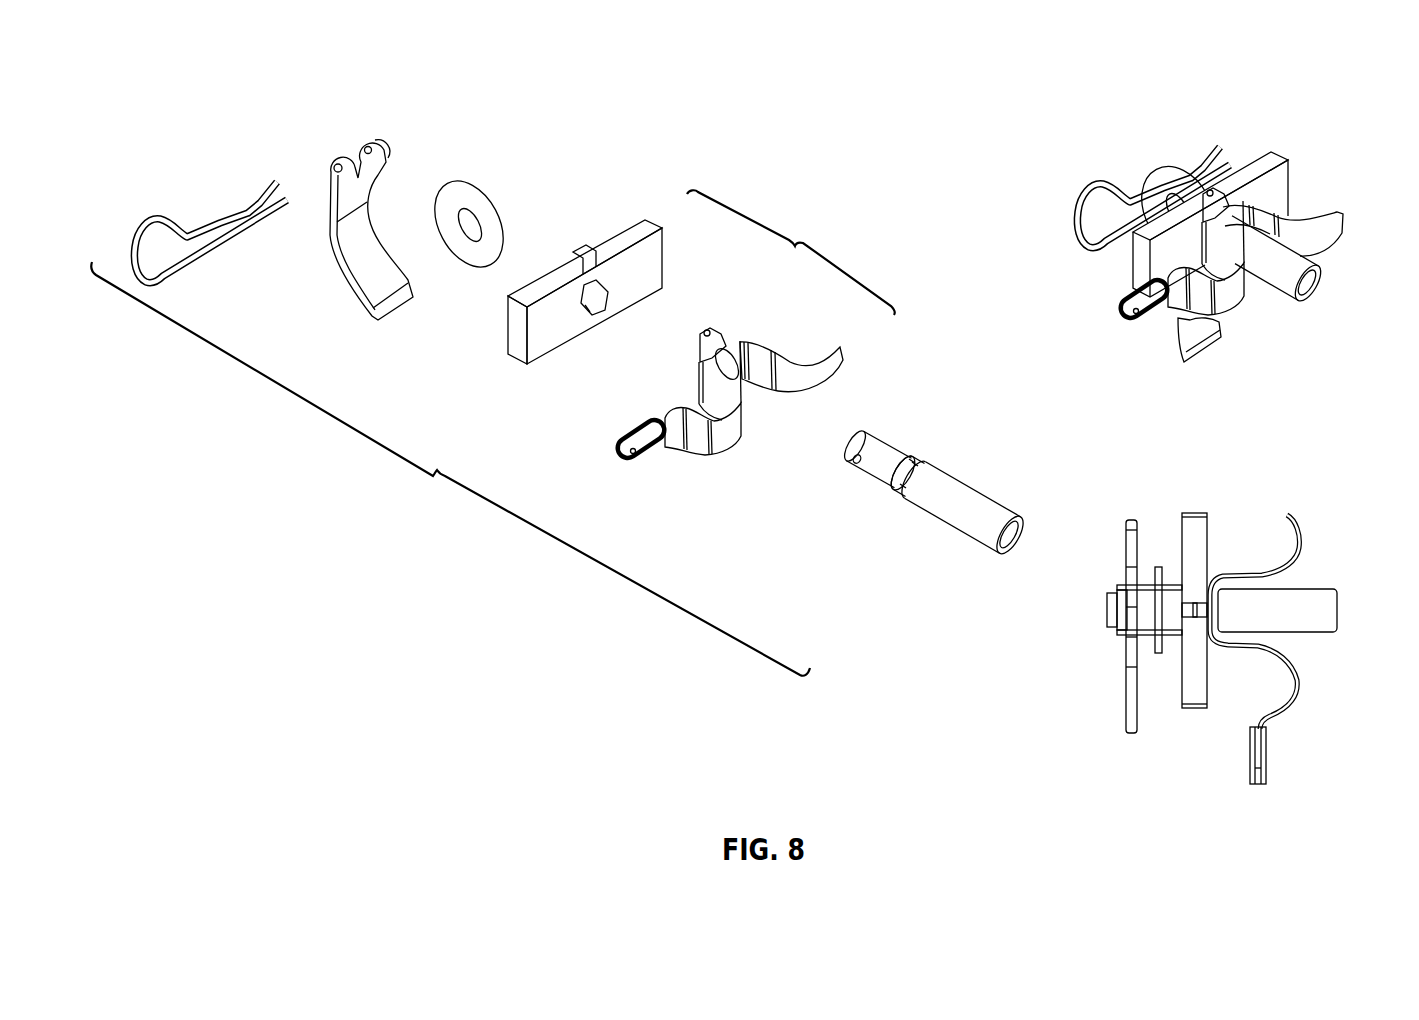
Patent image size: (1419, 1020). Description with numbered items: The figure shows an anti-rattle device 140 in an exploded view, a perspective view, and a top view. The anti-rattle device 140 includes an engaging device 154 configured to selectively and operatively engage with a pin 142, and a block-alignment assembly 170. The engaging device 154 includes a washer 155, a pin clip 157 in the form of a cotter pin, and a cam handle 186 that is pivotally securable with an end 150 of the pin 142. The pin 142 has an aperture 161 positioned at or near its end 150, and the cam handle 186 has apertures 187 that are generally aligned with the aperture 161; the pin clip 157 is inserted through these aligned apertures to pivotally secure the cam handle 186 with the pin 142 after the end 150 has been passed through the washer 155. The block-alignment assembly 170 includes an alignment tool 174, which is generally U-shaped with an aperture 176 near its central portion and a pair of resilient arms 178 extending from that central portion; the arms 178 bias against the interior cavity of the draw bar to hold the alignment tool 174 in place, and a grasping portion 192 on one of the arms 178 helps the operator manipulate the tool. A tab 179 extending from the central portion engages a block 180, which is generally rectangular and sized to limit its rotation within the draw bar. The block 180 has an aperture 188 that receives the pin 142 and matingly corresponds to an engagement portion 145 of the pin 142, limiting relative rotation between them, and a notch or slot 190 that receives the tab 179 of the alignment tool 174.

The anti-rattle device 140 is at (1345, 123).
The pin 142 is at (960, 518).
The engagement portion 145 is at (893, 485).
The end 150 is at (867, 440).
The engaging device 154 is at (445, 143).
The washer 155 is at (492, 197).
The pin clip 157 is at (197, 253).
The aperture 161 is at (852, 461).
The block-alignment assembly 170 is at (791, 252).
The alignment tool 174 is at (1313, 240).
The aperture 176 is at (744, 378).
The arms 178 is at (835, 362).
The tab 179 is at (706, 325).
The block 180 is at (653, 257).
The cam handle 186 is at (353, 260).
The apertures 187 is at (366, 150).
The aperture 188 is at (597, 308).
The notch or slot 190 is at (585, 253).
The grasping portion 192 is at (645, 447).